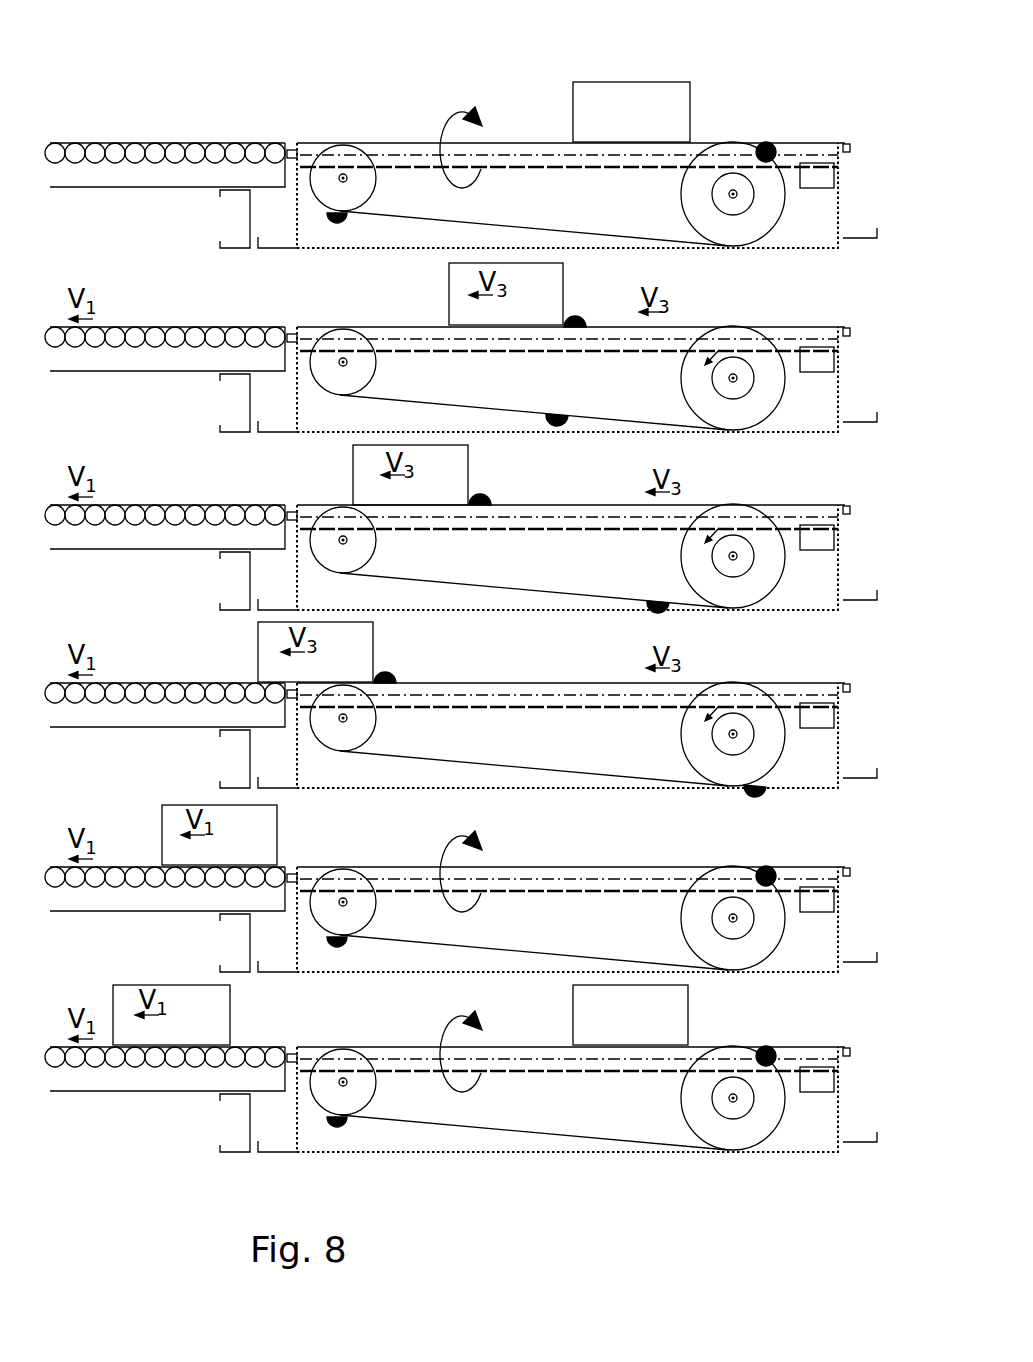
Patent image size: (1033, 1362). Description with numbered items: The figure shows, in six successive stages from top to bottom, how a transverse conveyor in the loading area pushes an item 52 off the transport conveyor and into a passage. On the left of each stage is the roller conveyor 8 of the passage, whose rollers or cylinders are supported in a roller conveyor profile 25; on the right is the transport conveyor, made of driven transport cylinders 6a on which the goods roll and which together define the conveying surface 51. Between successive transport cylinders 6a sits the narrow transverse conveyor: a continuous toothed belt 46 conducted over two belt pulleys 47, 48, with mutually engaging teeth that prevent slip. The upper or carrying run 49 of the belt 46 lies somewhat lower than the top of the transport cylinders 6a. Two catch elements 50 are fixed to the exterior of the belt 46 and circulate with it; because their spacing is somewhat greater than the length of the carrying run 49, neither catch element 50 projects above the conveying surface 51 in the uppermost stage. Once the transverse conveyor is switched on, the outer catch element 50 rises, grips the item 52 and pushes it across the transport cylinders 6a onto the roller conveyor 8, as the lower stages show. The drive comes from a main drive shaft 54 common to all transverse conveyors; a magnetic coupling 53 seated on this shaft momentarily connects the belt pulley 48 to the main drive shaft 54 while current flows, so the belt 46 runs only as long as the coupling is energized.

The transport cylinders 6a is at (818, 148).
The roller conveyor 8 is at (157, 139).
The roller conveyor profile 25 is at (95, 180).
The continuous belt 46 is at (500, 147).
The belt pulley 47 is at (372, 185).
The belt pulley 48 is at (685, 183).
The carrying run 49 is at (535, 143).
The catch elements 50 is at (770, 143).
The conveying surface 51 is at (792, 143).
The item 52 is at (652, 96).
The magnetic coupling 53 is at (740, 205).
The main drive shaft 54 is at (730, 200).